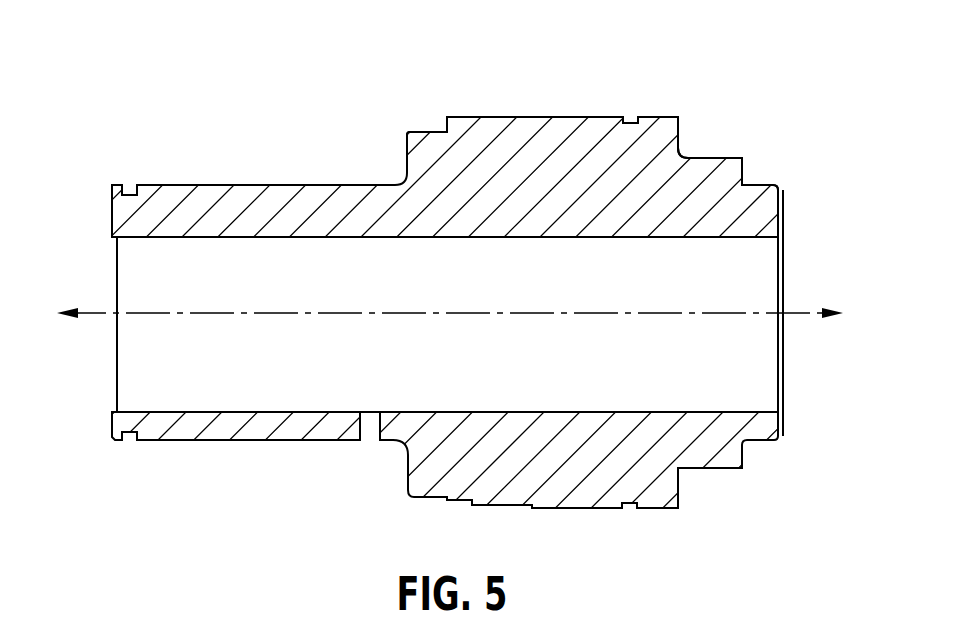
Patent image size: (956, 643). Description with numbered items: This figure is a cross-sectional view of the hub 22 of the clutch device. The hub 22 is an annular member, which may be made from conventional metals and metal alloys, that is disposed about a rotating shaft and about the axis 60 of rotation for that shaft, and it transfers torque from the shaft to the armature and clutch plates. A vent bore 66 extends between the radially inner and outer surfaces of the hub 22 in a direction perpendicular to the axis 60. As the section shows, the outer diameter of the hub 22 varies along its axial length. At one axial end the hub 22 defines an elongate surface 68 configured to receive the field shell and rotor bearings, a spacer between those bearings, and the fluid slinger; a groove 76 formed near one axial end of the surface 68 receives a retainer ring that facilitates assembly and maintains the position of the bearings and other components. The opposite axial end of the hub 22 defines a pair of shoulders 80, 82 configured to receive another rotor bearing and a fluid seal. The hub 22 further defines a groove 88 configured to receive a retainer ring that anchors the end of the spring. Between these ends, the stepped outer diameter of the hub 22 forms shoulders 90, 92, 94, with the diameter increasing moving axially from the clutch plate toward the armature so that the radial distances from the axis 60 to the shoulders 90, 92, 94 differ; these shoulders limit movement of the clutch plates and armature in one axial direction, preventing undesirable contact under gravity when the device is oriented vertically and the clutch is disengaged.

The hub 22 is at (360, 108).
The axis 60 is at (99, 316).
The vent bore 66 is at (362, 434).
The elongate surface 68 is at (322, 186).
The groove 76 is at (132, 186).
The shoulder 80 is at (743, 185).
The shoulder 82 is at (682, 158).
The groove 88 is at (632, 118).
The shoulder 90 is at (449, 130).
The shoulder 92 is at (476, 123).
The shoulder 94 is at (534, 117).